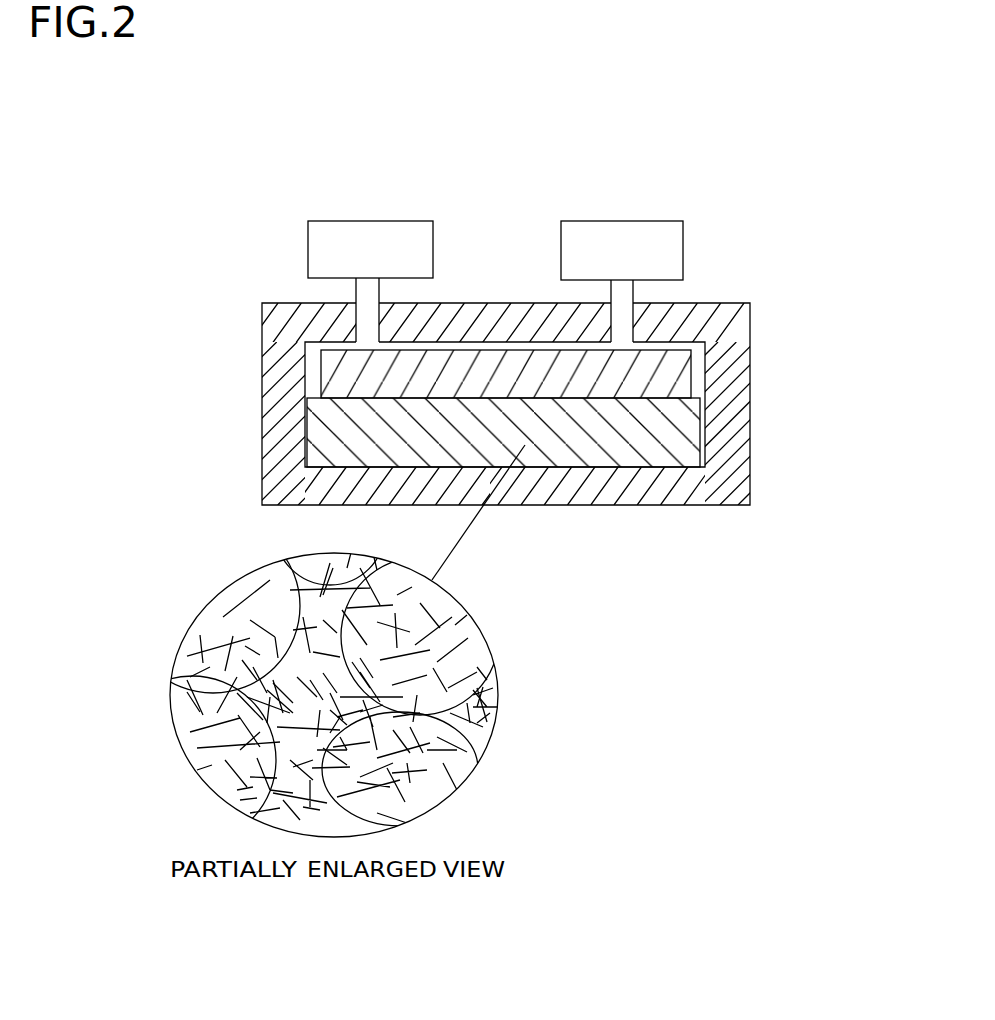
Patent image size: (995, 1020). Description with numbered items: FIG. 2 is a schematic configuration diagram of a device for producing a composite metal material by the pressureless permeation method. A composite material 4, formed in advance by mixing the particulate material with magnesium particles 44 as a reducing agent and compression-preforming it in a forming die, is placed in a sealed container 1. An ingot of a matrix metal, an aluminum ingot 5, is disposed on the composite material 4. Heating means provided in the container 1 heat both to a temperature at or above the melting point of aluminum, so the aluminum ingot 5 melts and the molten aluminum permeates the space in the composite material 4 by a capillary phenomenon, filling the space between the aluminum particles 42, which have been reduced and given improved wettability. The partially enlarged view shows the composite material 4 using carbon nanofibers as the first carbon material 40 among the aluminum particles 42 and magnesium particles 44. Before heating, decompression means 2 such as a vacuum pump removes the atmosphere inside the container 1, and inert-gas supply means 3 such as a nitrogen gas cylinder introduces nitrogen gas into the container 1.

The sealed container 1 is at (690, 313).
The decompression means 2 is at (362, 232).
The inert-gas supply means 3 is at (637, 228).
The composite material 4 is at (603, 428).
The aluminum ingot 5 is at (633, 375).
The first carbon material 40 is at (457, 772).
The aluminum particles 42 is at (468, 613).
The magnesium particles 44 is at (348, 568).